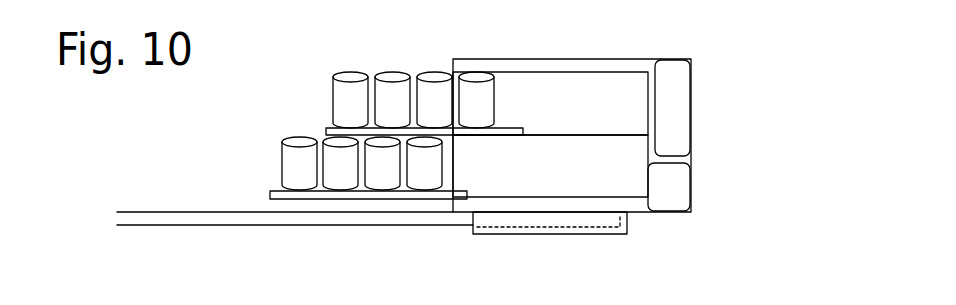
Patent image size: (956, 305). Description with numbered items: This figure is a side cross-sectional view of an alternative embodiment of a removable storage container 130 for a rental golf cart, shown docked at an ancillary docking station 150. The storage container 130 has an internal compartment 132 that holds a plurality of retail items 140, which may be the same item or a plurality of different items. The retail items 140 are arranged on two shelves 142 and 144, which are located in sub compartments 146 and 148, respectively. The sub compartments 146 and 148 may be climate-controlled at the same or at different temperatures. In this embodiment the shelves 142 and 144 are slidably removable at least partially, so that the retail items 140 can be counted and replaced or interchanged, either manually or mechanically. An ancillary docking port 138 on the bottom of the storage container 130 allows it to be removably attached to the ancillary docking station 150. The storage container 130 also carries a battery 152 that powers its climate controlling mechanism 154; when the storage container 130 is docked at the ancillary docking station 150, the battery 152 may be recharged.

The storage container 130 is at (748, 111).
The internal compartment 132 is at (565, 88).
The ancillary docking port 138 is at (613, 234).
The retail items 140 is at (433, 85).
The shelf 142 is at (270, 193).
The shelf 144 is at (326, 128).
The sub compartment 146 is at (550, 166).
The sub compartment 148 is at (550, 103).
The ancillary docking station 150 is at (172, 218).
The battery 152 is at (682, 190).
The climate controlling mechanism 154 is at (675, 130).